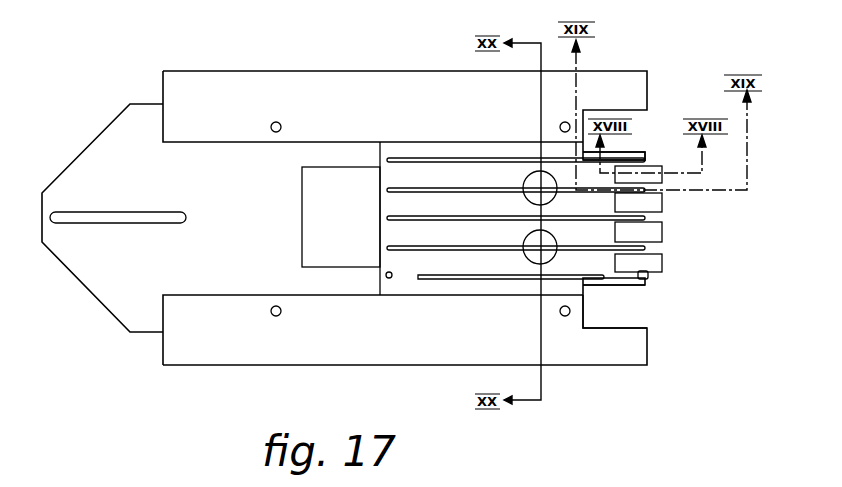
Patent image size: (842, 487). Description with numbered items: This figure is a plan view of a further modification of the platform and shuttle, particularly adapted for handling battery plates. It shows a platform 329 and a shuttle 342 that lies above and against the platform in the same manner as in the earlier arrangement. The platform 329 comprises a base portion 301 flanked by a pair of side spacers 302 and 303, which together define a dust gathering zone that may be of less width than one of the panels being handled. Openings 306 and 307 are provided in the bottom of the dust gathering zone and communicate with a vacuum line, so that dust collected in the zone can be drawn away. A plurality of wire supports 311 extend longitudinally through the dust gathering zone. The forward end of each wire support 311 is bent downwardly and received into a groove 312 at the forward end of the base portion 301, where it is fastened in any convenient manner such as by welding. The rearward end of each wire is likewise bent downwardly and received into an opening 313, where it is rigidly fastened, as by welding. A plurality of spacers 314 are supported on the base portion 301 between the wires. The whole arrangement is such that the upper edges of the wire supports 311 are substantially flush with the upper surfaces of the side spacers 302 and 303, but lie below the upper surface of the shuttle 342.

The base portion 301 is at (622, 278).
The side spacer 302 is at (213, 82).
The side spacer 303 is at (255, 366).
The opening 306 is at (523, 247).
The opening 307 is at (523, 188).
The wire support 311 is at (598, 152).
The groove 312 is at (649, 279).
The opening 313 is at (392, 278).
The spacer 314 is at (663, 262).
The platform 329 is at (412, 154).
The shuttle 342 is at (256, 180).